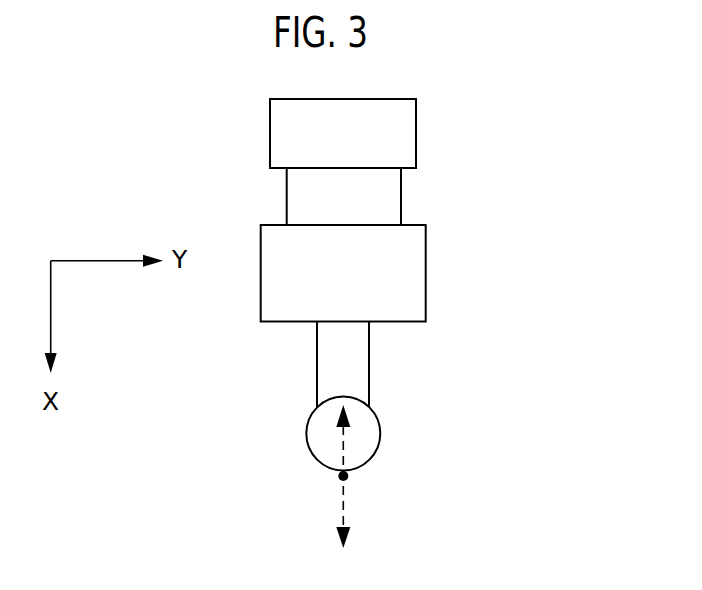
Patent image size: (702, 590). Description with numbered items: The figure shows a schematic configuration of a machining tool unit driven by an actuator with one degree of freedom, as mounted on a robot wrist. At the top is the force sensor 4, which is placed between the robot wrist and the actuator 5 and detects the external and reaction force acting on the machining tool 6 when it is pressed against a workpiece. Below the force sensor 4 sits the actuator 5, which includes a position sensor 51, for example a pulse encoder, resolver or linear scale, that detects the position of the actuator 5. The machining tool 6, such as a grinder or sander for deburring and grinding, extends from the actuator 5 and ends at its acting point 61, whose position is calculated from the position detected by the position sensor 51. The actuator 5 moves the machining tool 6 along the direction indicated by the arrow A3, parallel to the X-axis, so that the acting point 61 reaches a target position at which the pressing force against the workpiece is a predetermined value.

The force sensor 4 is at (416, 136).
The position sensor 51 is at (401, 211).
The actuator 5 is at (426, 281).
The machining tool 6 is at (388, 368).
The acting point 61 is at (381, 437).
The arrow A3 is at (340, 517).